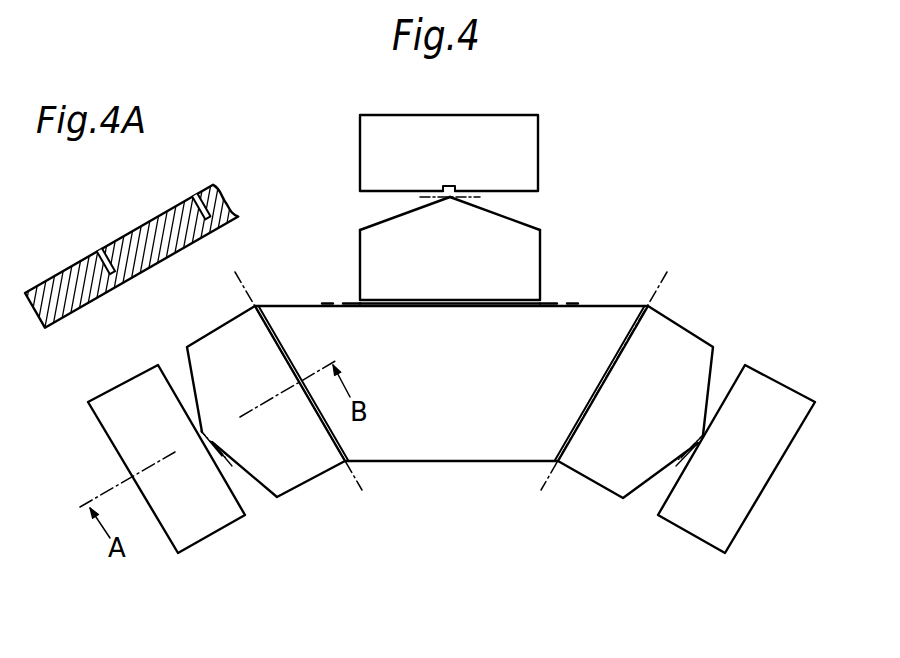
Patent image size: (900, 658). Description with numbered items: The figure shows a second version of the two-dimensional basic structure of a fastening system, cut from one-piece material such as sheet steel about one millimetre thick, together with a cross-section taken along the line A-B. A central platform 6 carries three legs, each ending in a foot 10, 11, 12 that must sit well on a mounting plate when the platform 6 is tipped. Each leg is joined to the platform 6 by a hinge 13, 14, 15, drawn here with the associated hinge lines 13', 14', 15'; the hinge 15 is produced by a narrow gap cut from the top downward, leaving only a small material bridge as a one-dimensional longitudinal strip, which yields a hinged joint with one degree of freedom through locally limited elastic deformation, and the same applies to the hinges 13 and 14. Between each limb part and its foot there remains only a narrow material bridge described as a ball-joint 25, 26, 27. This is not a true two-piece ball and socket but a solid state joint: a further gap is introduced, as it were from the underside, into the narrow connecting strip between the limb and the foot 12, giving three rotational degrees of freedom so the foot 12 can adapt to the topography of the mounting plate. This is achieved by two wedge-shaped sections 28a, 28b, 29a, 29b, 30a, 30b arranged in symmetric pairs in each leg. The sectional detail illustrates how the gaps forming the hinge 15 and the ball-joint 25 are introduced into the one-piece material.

In FIG. 4, the platform 6 is at (470, 462).
In FIG. 4, the foot 10 is at (739, 521).
In FIG. 4, the foot 11 is at (360, 160).
In FIG. 4, the foot 12 is at (199, 540).
In FIG. 4A, the foot 12 is at (60, 311).
In FIG. 4, the hinge 13 is at (600, 383).
In FIG. 4, the right fold axis 13' is at (598, 412).
In FIG. 4, the hinge 14 is at (450, 267).
In FIG. 4, the top wall fold line 14' is at (431, 279).
In FIG. 4, the hinge 15 is at (304, 385).
In FIG. 4A, the hinge 15 is at (174, 180).
In FIG. 4, the left fold axis 15' is at (329, 397).
In FIG. 4, the ball-joint 25 is at (201, 438).
In FIG. 4A, the ball-joint 25 is at (97, 253).
In FIG. 4, the ball-joint 26 is at (700, 438).
In FIG. 4, the ball-joint 27 is at (449, 190).
In FIG. 4, the wedge-shaped section 28a is at (193, 400).
In FIG. 4, the wedge-shaped section 28b is at (236, 470).
In FIG. 4, the wedge-shaped section 29a is at (666, 470).
In FIG. 4, the wedge-shaped section 29b is at (722, 398).
In FIG. 4, the wedge-shaped section 30a is at (405, 203).
In FIG. 4, the wedge-shaped section 30b is at (497, 203).